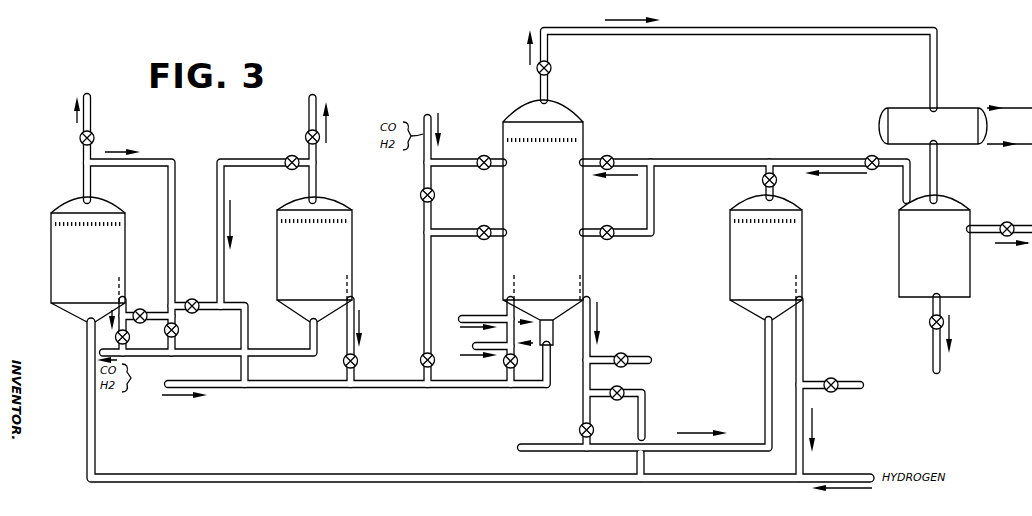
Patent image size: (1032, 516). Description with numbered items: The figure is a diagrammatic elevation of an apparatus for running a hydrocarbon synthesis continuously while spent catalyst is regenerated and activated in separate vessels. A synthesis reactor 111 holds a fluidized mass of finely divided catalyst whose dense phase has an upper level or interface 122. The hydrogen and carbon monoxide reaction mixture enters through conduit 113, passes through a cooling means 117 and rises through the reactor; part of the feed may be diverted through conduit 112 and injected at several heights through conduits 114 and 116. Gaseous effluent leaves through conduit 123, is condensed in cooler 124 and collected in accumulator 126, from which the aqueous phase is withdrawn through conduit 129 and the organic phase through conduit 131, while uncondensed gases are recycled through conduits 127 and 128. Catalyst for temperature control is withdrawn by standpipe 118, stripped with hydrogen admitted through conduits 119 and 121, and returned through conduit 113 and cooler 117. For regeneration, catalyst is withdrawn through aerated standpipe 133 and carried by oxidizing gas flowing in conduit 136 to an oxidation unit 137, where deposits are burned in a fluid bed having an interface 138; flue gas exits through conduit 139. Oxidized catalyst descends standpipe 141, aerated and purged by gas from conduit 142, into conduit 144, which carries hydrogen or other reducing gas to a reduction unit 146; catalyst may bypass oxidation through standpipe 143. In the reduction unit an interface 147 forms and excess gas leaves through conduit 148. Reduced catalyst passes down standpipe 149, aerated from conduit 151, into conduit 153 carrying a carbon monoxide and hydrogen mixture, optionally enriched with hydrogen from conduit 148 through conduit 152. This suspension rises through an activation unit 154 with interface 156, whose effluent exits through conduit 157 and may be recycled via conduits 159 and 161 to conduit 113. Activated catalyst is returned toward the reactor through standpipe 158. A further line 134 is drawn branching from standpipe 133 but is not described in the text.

The synthesis reactor 111 is at (585, 194).
The conduit 112 is at (423, 166).
The conduit 113 is at (406, 364).
The conduit 114 is at (448, 160).
The conduit 116 is at (448, 230).
The cooling means 117 is at (556, 342).
The standpipe 118 is at (506, 300).
The conduit 119 is at (470, 303).
The conduit 121 is at (479, 346).
The interface 122 is at (585, 140).
The conduit 123 is at (549, 72).
The cooler 124 is at (949, 108).
The accumulator 126 is at (973, 215).
The conduit 127 is at (903, 172).
The conduit 128 is at (658, 208).
The conduit 129 is at (933, 340).
The conduit 131 is at (991, 234).
The standpipe 133 is at (582, 382).
The branch line 134 is at (637, 357).
The conduit 136 is at (579, 449).
The oxidation unit 137 is at (730, 276).
The interface 138 is at (804, 222).
The conduit 139 is at (777, 183).
The standpipe 141 is at (804, 315).
The conduit 142 is at (812, 382).
The conduit 143 is at (646, 461).
The conduit 144 is at (326, 473).
The reduction unit 146 is at (50, 264).
The interface 147 is at (50, 225).
The conduit 148 is at (84, 166).
The standpipe 149 is at (128, 313).
The conduit 151 is at (127, 338).
The conduit 152 is at (168, 238).
The conduit 153 is at (165, 354).
The activation unit 154 is at (335, 255).
The interface 156 is at (353, 215).
The conduit 157 is at (316, 157).
The standpipe 158 is at (346, 340).
The conduit 159 is at (220, 195).
The conduit 161 is at (194, 311).